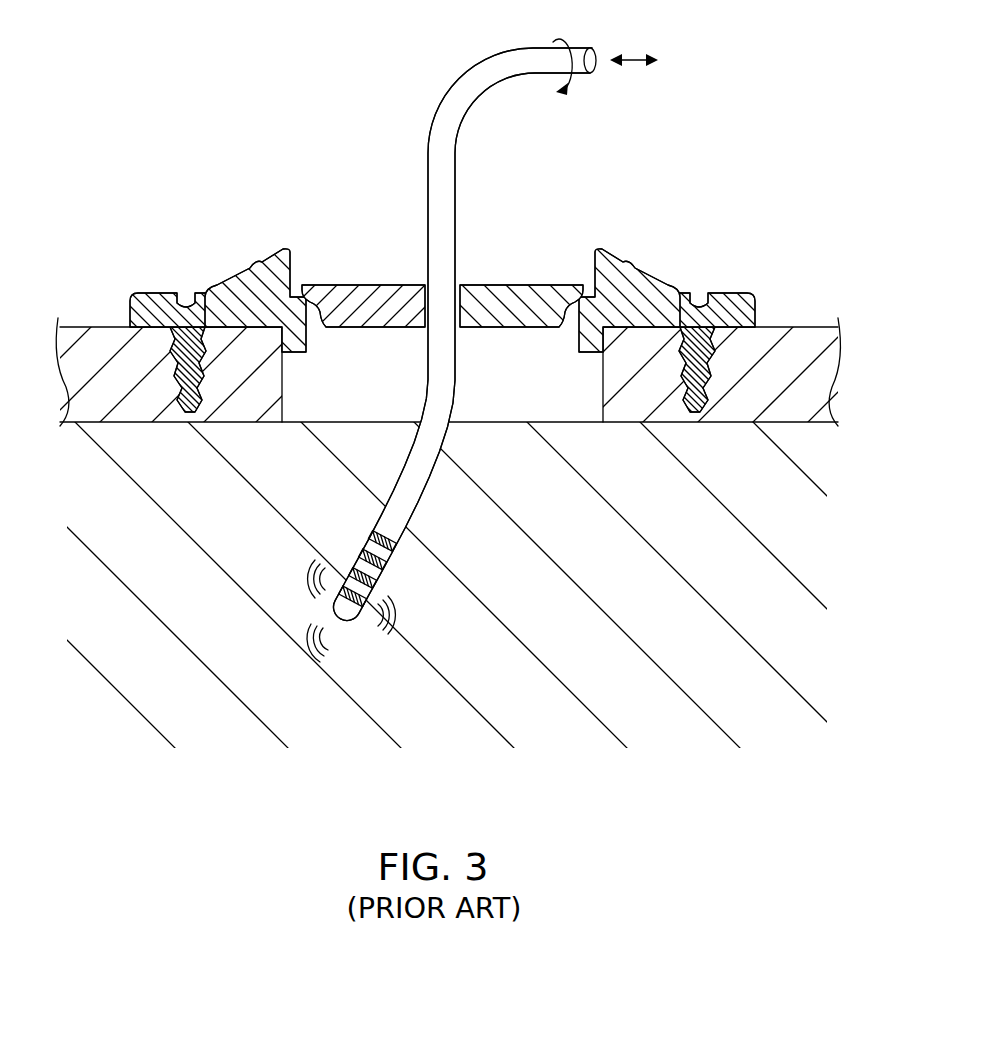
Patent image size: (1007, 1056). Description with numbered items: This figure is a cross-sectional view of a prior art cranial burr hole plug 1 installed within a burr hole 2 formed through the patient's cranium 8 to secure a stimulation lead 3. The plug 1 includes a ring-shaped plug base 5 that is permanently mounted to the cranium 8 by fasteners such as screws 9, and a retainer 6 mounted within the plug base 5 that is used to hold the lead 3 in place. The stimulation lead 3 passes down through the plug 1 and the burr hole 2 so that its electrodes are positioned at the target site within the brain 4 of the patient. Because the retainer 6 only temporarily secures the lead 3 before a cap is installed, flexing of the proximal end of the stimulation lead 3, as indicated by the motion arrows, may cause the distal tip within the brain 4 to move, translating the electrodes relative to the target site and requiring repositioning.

The cranial burr hole plug 1 is at (619, 246).
The burr hole 2 is at (508, 410).
The stimulation lead 3 is at (455, 170).
The brain 4 is at (312, 687).
The plug base 5 is at (257, 268).
The retainer 6 is at (352, 292).
The cranium 8 is at (108, 342).
The screws 9 is at (165, 290).